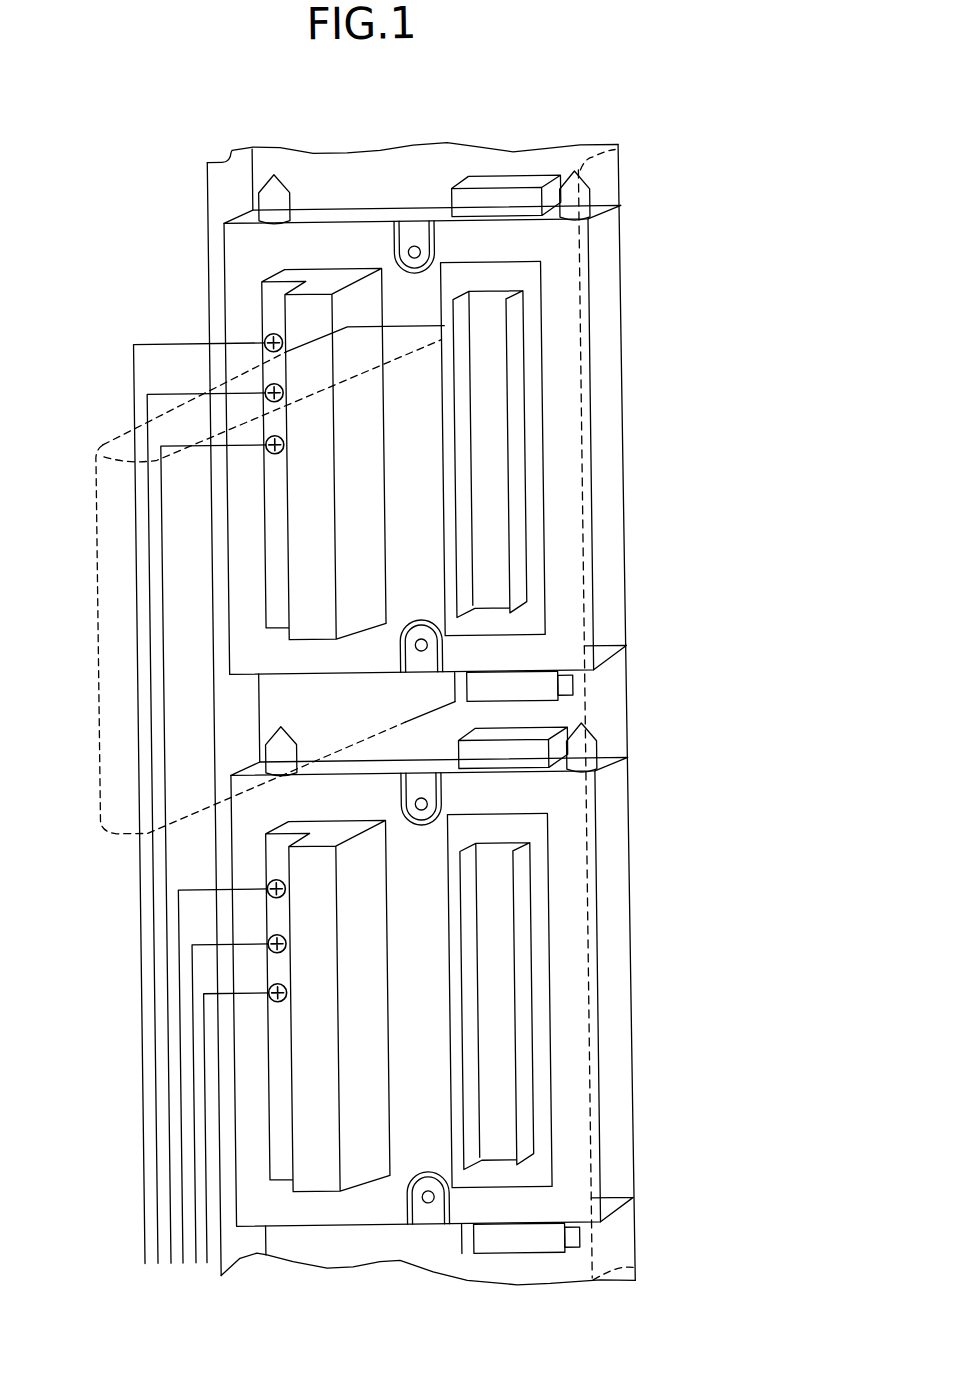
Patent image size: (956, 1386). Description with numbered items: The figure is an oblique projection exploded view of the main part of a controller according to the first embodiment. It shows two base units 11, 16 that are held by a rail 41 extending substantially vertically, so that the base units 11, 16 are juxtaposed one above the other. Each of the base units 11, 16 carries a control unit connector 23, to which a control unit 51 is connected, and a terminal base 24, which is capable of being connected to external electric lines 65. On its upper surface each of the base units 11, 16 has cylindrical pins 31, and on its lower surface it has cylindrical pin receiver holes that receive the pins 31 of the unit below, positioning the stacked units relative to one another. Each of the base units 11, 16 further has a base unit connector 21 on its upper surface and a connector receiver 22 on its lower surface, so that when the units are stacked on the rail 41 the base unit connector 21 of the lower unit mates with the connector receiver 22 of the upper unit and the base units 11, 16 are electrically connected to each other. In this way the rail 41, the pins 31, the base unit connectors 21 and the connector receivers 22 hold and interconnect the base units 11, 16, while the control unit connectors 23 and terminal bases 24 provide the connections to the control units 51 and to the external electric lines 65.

The base unit 11 is at (573, 490).
The base unit 16 is at (575, 937).
The base unit connector 21 is at (508, 198).
The connector receiver 22 is at (533, 683).
The control unit connector 23 is at (498, 431).
The terminal base 24 is at (278, 317).
The cylindrical pin 31 is at (287, 178).
The rail 41 is at (226, 190).
The control unit 51 is at (101, 593).
The external electric line 65 is at (139, 1027).